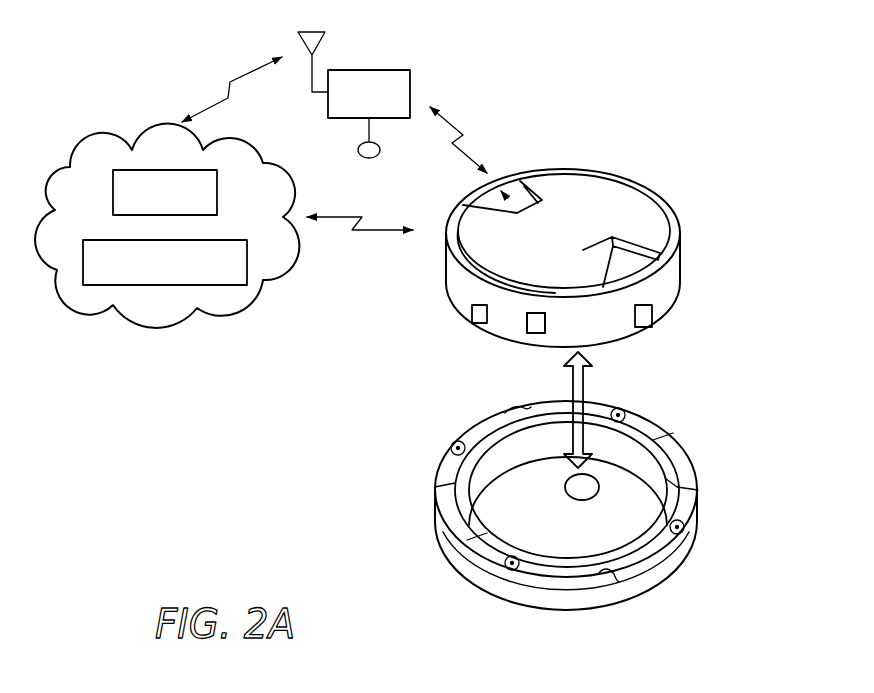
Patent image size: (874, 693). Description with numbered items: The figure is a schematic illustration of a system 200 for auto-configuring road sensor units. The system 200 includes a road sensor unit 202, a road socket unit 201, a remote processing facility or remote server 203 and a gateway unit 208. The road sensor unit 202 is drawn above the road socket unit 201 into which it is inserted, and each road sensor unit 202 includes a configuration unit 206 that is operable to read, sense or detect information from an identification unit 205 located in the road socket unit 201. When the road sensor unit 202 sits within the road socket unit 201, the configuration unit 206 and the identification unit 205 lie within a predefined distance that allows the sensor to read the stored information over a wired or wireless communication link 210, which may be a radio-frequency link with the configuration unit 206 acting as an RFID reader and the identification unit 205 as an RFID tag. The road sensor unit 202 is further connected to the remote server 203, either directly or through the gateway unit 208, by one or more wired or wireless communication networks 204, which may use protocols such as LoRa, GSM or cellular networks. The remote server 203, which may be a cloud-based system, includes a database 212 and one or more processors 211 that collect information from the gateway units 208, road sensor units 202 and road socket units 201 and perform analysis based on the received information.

The system 200 is at (745, 116).
The road socket unit 201 is at (438, 567).
The road sensor unit 202 is at (678, 201).
The remote server 203 is at (80, 317).
The communication network 204 is at (230, 82).
The identification unit 205 is at (599, 487).
The configuration unit 206 is at (525, 323).
The gateway unit 208 is at (373, 70).
The communication link 210 is at (583, 378).
The processor 211 is at (143, 170).
The database 212 is at (220, 285).